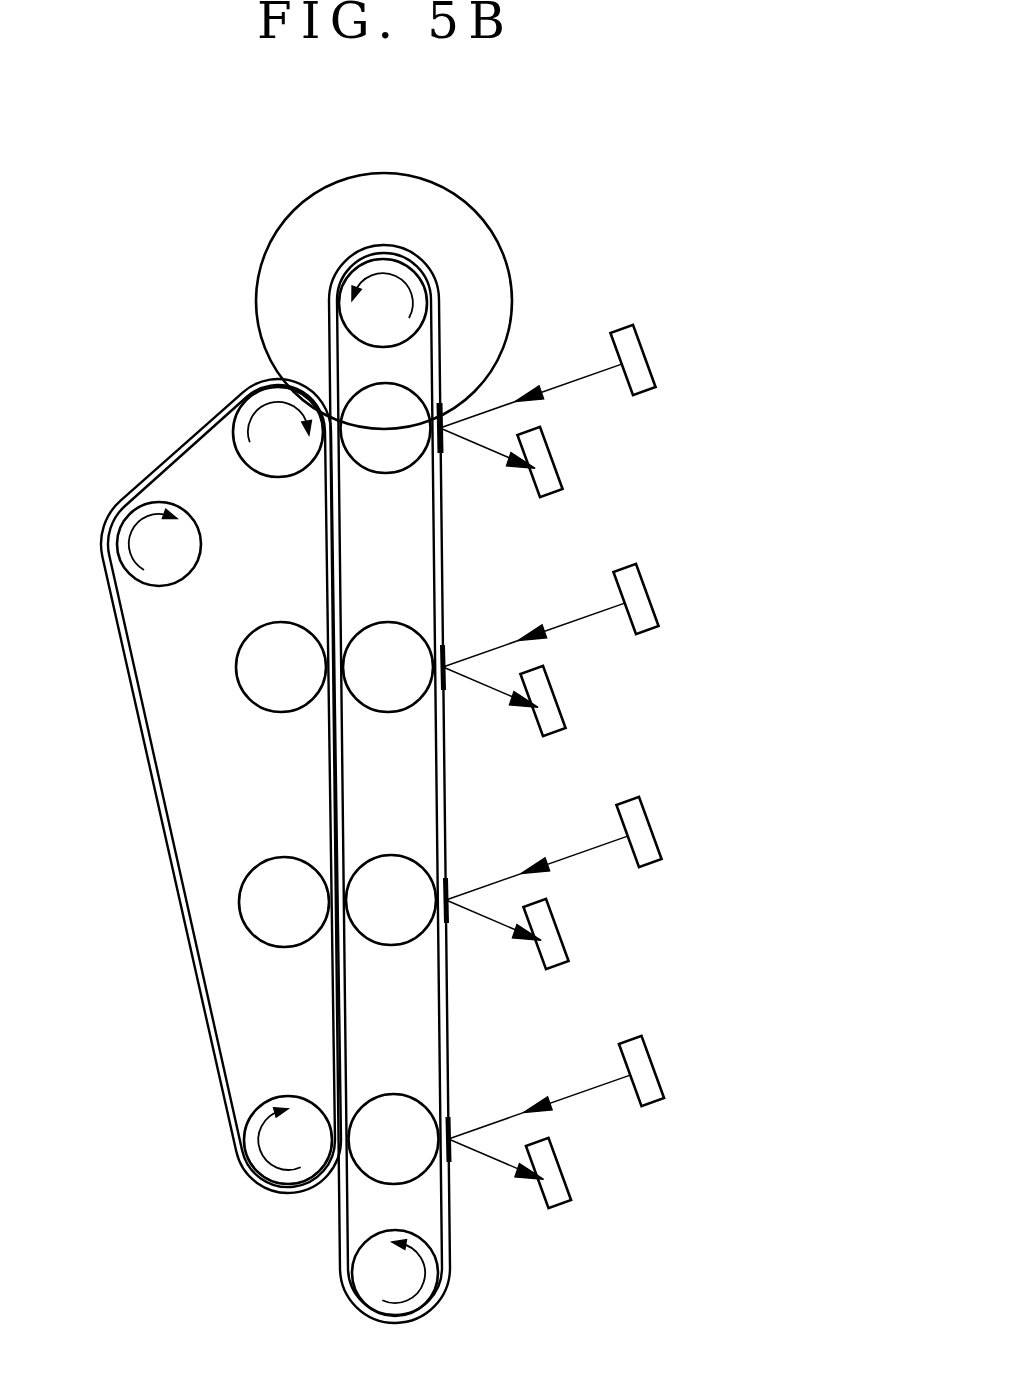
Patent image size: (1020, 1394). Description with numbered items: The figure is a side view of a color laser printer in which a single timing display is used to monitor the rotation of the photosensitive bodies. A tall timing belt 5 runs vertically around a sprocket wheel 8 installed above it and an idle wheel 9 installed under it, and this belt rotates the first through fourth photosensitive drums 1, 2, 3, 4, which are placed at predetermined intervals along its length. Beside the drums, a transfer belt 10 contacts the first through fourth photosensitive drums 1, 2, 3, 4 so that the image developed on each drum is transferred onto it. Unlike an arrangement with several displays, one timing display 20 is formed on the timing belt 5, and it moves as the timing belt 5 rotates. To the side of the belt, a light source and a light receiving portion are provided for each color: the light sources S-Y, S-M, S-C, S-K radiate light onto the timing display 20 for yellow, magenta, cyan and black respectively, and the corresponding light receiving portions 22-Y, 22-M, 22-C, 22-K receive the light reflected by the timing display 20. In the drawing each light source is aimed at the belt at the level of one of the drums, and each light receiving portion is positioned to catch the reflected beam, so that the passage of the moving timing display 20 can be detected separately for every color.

The first photosensitive drum 1 is at (385, 474).
The second photosensitive drum 2 is at (407, 640).
The third photosensitive drum 3 is at (413, 878).
The fourth photosensitive drum 4 is at (413, 1117).
The timing belt 5 is at (447, 997).
The sprocket wheel 8 is at (352, 312).
The idle wheel 9 is at (365, 1280).
The transfer belt 10 is at (182, 446).
The timing display 20 is at (443, 452).
The light source for yellow S-Y is at (643, 361).
The light source for magenta S-M is at (646, 600).
The light source for cyan S-C is at (649, 833).
The light source for black S-K is at (651, 1072).
The light receiving portion for yellow 22-Y is at (550, 468).
The light receiving portion for magenta 22-M is at (553, 707).
The light receiving portion for cyan 22-C is at (556, 941).
The light receiving portion for black 22-K is at (558, 1180).